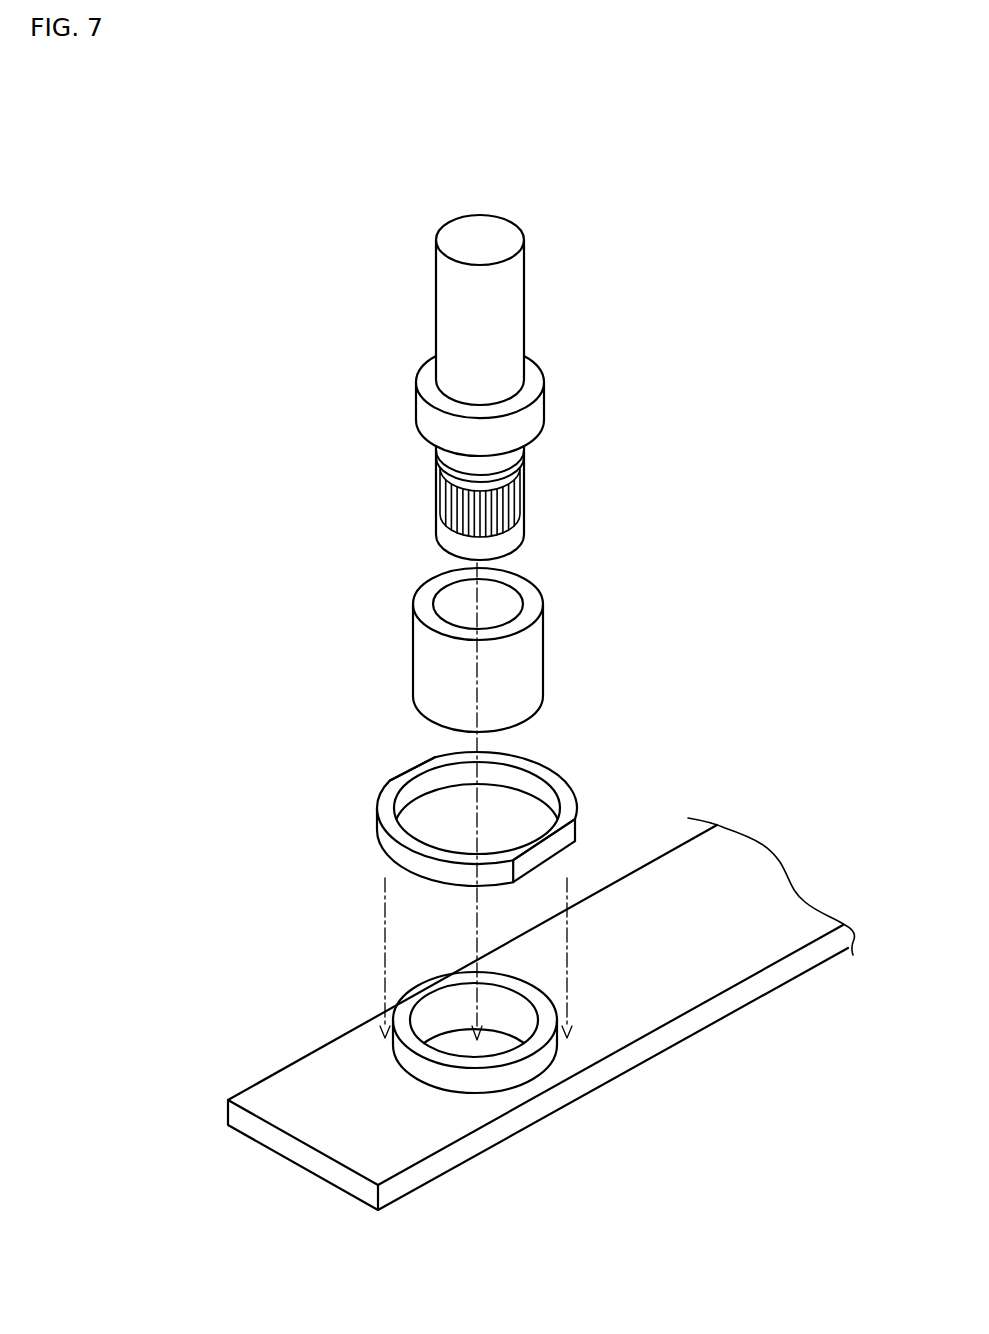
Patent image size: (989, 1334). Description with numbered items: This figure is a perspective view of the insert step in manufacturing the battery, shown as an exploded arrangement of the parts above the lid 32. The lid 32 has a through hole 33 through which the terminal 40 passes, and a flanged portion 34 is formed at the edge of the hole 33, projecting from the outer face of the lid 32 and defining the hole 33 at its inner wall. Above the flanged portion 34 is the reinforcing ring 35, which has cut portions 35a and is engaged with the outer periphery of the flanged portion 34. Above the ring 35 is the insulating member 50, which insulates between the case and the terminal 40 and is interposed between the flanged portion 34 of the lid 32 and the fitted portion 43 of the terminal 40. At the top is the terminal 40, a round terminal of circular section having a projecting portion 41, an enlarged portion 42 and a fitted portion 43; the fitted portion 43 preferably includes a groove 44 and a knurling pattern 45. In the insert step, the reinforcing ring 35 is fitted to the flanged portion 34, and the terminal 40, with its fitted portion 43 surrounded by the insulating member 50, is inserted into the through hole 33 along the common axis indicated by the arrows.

The lid 32 is at (322, 1077).
The through hole 33 is at (528, 1015).
The flanged portion 34 is at (422, 1067).
The reinforcing ring 35 is at (471, 810).
The cut portions 35a is at (385, 776).
The terminal 40 is at (333, 298).
The projecting portion 41 is at (515, 295).
The enlarged portion 42 is at (540, 407).
The fitted portion 43 is at (518, 451).
The groove 44 is at (437, 463).
The knurling pattern 45 is at (447, 500).
The insulating member 50 is at (423, 650).